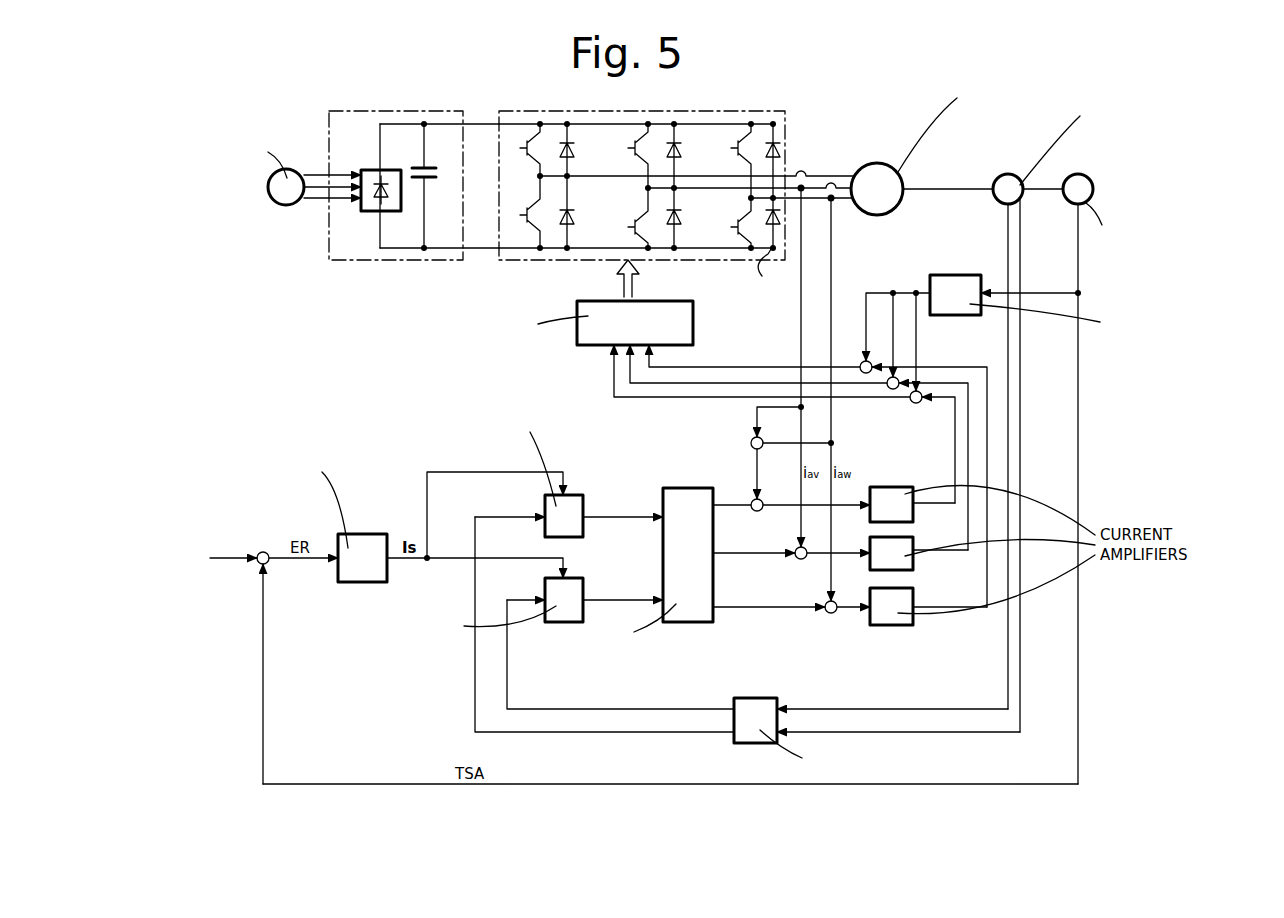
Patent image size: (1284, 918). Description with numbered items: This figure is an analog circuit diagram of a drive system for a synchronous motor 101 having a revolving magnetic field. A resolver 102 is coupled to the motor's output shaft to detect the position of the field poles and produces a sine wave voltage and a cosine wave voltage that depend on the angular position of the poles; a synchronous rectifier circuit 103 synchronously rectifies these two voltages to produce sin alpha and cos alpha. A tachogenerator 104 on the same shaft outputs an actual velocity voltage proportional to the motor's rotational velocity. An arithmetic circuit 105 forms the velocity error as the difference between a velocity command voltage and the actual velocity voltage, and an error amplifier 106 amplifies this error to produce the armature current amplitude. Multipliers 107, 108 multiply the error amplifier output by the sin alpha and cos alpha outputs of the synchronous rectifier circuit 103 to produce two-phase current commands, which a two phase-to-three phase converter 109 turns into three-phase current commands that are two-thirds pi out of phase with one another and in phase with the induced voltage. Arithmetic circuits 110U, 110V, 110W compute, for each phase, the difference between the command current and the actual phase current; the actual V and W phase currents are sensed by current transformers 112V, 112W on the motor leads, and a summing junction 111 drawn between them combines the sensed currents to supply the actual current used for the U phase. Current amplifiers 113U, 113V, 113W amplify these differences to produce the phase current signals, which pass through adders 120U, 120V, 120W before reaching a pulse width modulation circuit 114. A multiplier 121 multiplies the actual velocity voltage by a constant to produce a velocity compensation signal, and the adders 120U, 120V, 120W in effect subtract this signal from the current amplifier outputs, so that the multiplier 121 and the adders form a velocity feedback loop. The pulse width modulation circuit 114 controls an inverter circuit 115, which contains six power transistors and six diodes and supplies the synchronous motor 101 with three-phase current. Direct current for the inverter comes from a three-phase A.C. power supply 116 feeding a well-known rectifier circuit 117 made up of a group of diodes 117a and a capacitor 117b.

The synchronous motor 101 is at (876, 215).
The resolver 102 is at (1015, 170).
The synchronous rectifier circuit 103 is at (760, 698).
The tachogenerator 104 is at (1090, 172).
The arithmetic circuit 105 is at (265, 552).
The error amplifier 106 is at (362, 528).
The multiplier 107 is at (580, 494).
The multiplier 108 is at (586, 580).
The two phase-to-three phase converter 109 is at (680, 488).
The arithmetic circuit 110U is at (758, 512).
The arithmetic circuit 110V is at (802, 562).
The arithmetic circuit 110W is at (832, 614).
The adder 111 is at (752, 440).
The current transformer 112V is at (802, 176).
The current transformer 112W is at (832, 192).
The current amplifier 113U is at (892, 486).
The current amplifier 113V is at (912, 542).
The current amplifier 113W is at (912, 592).
The pulse width modulation circuit 114 is at (577, 330).
The inverter circuit 115 is at (740, 111).
The three-phase A.C. power supply 116 is at (280, 202).
The rectifier circuit 117 is at (414, 172).
The group of diodes 117a is at (370, 211).
The capacitor 117b is at (432, 176).
The adder 120U is at (920, 395).
The adder 120V is at (896, 377).
The adder 120W is at (852, 358).
The multiplier 121 is at (960, 278).